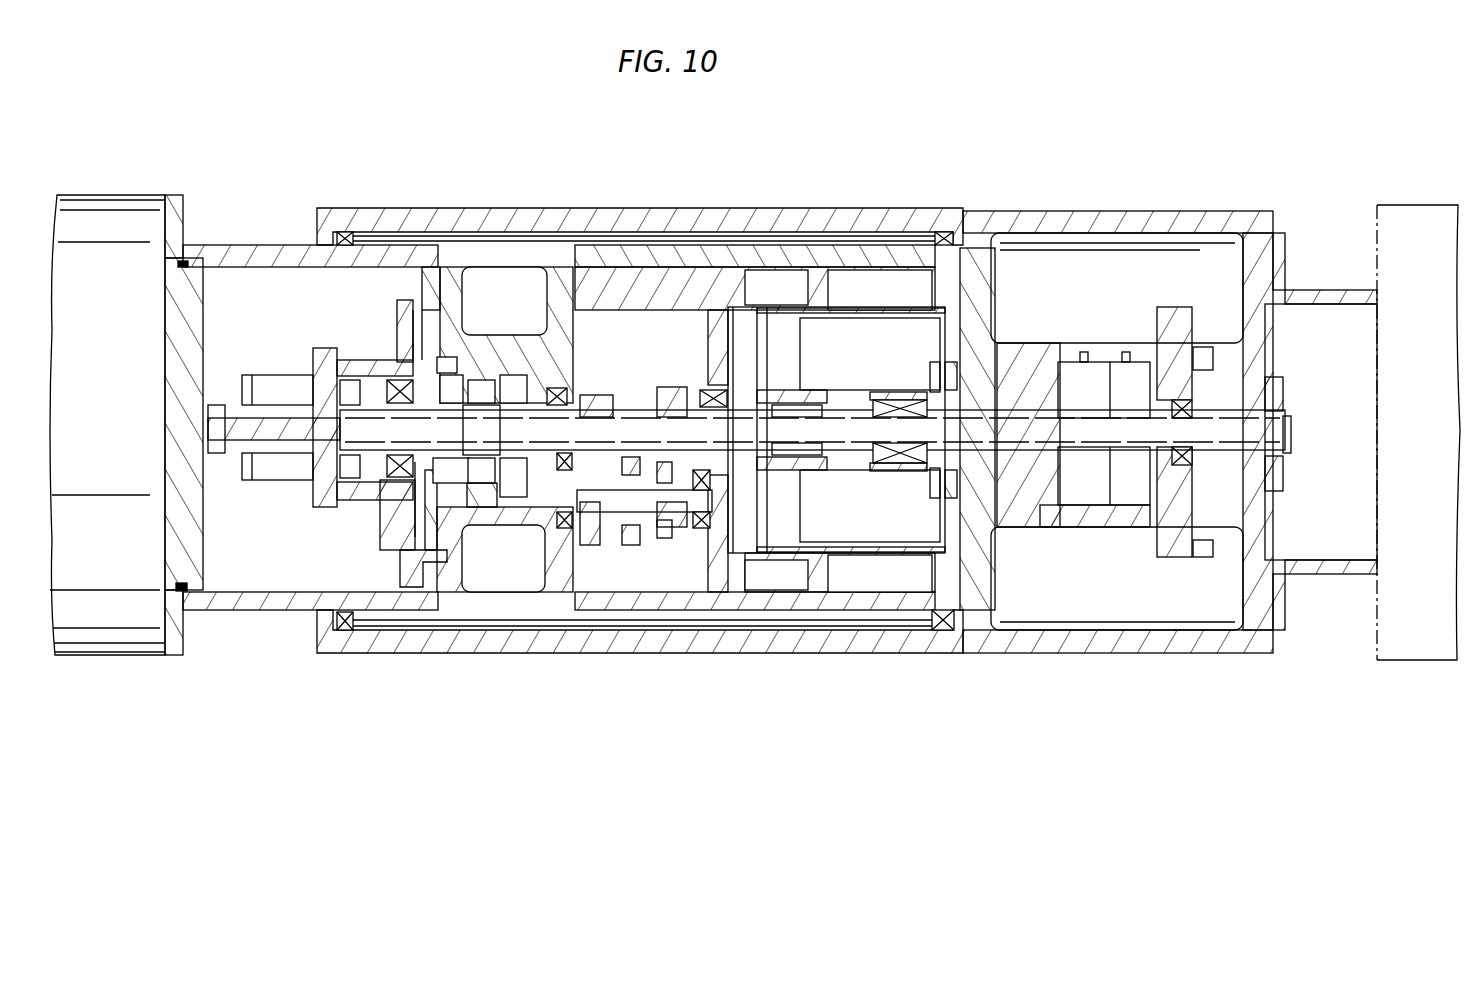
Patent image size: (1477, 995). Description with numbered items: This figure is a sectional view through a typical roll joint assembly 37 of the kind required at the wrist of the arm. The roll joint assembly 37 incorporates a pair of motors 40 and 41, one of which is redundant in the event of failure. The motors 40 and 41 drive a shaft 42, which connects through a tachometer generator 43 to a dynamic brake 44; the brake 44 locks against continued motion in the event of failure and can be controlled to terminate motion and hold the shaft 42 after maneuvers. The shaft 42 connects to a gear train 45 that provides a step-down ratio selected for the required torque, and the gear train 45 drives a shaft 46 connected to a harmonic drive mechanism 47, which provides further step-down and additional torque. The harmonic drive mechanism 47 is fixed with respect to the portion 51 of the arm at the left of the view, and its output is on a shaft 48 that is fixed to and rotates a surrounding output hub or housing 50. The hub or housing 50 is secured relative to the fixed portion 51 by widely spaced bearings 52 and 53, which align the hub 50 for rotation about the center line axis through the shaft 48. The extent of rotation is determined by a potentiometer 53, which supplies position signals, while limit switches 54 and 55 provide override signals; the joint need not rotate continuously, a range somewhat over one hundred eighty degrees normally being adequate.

The roll joint assembly 37 is at (265, 741).
The motor 40 is at (423, 458).
The motor 41 is at (518, 497).
The shaft 42 is at (385, 423).
The tachometer generator 43 is at (360, 478).
The dynamic brake 44 is at (272, 470).
The gear train 45 is at (650, 538).
The shaft 46 is at (702, 428).
The harmonic drive mechanism 47 is at (885, 312).
The shaft 48 is at (1090, 440).
The output hub or housing 50 is at (1200, 654).
The fixed portion of the arm 51 is at (119, 193).
The bearing 52 is at (347, 228).
The bearing and potentiometer 53 is at (1113, 362).
The limit switch 54 is at (1212, 558).
The limit switch 55 is at (1230, 346).